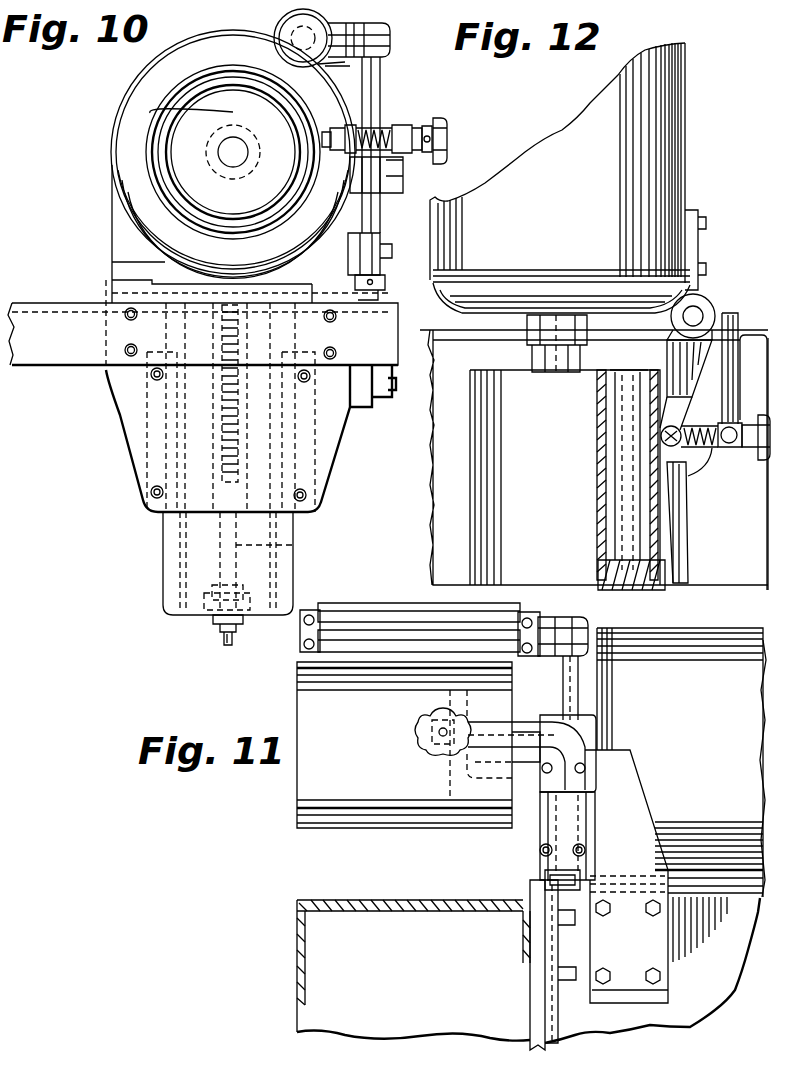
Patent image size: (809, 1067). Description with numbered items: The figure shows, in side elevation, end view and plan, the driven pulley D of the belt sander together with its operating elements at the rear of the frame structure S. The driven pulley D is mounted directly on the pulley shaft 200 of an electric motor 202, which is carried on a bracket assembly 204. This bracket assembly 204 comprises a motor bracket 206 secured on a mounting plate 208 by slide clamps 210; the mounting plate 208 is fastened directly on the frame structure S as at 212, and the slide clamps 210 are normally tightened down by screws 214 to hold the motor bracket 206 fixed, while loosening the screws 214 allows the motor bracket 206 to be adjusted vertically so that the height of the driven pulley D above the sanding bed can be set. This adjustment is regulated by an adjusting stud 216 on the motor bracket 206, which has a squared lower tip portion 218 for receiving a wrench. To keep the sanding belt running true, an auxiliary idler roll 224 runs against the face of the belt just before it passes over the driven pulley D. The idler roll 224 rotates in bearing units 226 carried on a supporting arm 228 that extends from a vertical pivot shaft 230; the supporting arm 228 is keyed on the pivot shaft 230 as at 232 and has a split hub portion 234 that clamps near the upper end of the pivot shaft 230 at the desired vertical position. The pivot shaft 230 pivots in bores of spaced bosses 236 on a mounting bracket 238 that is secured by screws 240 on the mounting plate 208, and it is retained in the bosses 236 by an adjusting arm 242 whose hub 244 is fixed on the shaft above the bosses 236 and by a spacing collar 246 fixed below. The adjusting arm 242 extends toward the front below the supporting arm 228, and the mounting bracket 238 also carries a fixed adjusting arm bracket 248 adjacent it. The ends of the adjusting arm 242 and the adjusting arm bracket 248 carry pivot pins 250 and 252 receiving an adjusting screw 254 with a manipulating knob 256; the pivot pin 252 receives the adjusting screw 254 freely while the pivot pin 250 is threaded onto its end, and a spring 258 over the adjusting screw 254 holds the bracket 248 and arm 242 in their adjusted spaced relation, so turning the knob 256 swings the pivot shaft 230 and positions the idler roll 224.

In FIG. 10, the pulley shaft 200 is at (230, 162).
In FIG. 12, the pulley shaft 200 is at (545, 343).
In FIG. 10, the electric motor 202 is at (118, 154).
In FIG. 12, the electric motor 202 is at (660, 135).
In FIG. 11, the electric motor 202 is at (700, 638).
In FIG. 10, the bracket assembly 204 is at (97, 290).
In FIG. 10, the motor bracket 206 is at (165, 551).
In FIG. 10, the mounting plate 208 is at (120, 414).
In FIG. 10, the slide clamps 210 is at (142, 462).
In FIG. 10, the fastening of mounting plate 212 is at (125, 348).
In FIG. 10, the screws 214 is at (150, 375).
In FIG. 10, the adjusting stud 216 is at (293, 546).
In FIG. 10, the squared lower tip portion 218 is at (232, 645).
In FIG. 10, the auxiliary idler roll 224 is at (276, 36).
In FIG. 12, the auxiliary idler roll 224 is at (597, 466).
In FIG. 11, the auxiliary idler roll 224 is at (378, 598).
In FIG. 12, the bearing units 226 is at (600, 576).
In FIG. 10, the supporting arm 228 is at (342, 66).
In FIG. 12, the supporting arm 228 is at (682, 518).
In FIG. 11, the supporting arm 228 is at (370, 656).
In FIG. 10, the vertical pivot shaft 230 is at (380, 79).
In FIG. 12, the vertical pivot shaft 230 is at (696, 312).
In FIG. 11, the vertical pivot shaft 230 is at (572, 680).
In FIG. 12, the key 232 is at (715, 316).
In FIG. 10, the split hub portion 234 is at (386, 36).
In FIG. 12, the split hub portion 234 is at (700, 318).
In FIG. 11, the split hub portion 234 is at (582, 609).
In FIG. 10, the bosses 236 is at (397, 184).
In FIG. 11, the bosses 236 is at (590, 772).
In FIG. 11, the mounting bracket 238 is at (640, 812).
In FIG. 11, the screws 240 is at (650, 968).
In FIG. 10, the adjusting arm 242 is at (352, 128).
In FIG. 12, the adjusting arm 242 is at (668, 398).
In FIG. 11, the hub 244 is at (584, 729).
In FIG. 11, the spacing collar 246 is at (545, 880).
In FIG. 10, the adjusting arm bracket 248 is at (412, 124).
In FIG. 12, the adjusting arm bracket 248 is at (742, 355).
In FIG. 11, the adjusting arm bracket 248 is at (520, 724).
In FIG. 12, the pivot pin 250 is at (695, 470).
In FIG. 12, the pivot pin 252 is at (748, 455).
In FIG. 10, the adjusting screw 254 is at (320, 139).
In FIG. 12, the adjusting screw 254 is at (660, 436).
In FIG. 10, the manipulating knob 256 is at (448, 139).
In FIG. 12, the manipulating knob 256 is at (765, 465).
In FIG. 11, the manipulating knob 256 is at (428, 752).
In FIG. 12, the spring 258 is at (698, 446).
In FIG. 10, the driven pulley D is at (152, 113).
In FIG. 12, the driven pulley D is at (475, 537).
In FIG. 11, the driven pulley D is at (298, 800).
In FIG. 10, the frame structure S is at (40, 356).
In FIG. 12, the frame structure S is at (433, 497).
In FIG. 11, the frame structure S is at (297, 915).